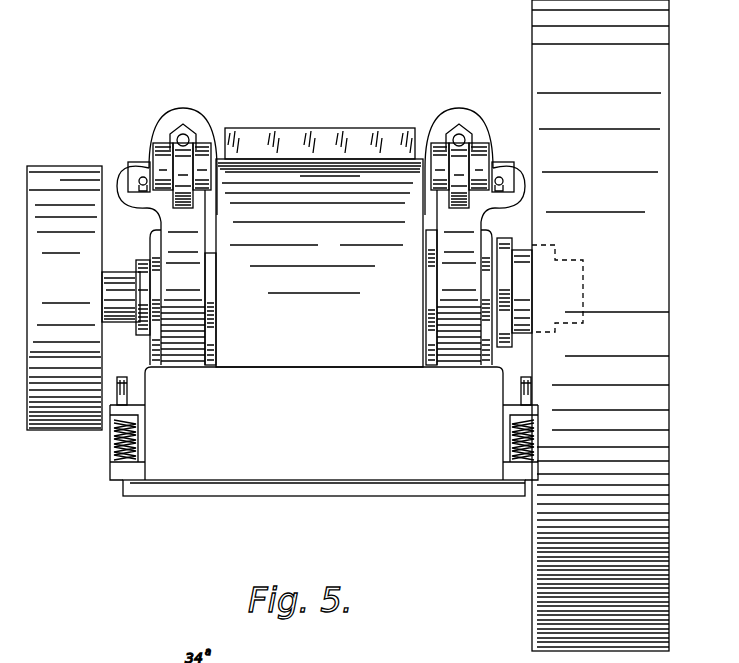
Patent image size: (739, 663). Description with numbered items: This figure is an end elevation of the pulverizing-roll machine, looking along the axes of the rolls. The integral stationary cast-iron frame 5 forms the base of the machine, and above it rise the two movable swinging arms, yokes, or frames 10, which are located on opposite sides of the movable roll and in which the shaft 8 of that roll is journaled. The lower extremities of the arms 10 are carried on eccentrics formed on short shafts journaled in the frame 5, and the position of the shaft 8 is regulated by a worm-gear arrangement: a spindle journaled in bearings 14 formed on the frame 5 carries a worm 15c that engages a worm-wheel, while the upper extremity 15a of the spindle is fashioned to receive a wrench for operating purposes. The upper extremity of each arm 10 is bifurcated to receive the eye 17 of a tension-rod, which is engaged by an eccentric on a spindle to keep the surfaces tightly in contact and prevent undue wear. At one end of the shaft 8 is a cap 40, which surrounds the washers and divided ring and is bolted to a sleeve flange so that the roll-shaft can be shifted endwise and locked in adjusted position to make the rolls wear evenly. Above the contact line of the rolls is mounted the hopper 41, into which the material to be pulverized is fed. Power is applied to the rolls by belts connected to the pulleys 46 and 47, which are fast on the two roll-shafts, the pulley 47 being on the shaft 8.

The stationary frame 5 is at (324, 431).
The roll-shaft 8 is at (120, 271).
The swinging arm 10 is at (188, 242).
The bearing 14 is at (116, 470).
The wrench-receiving extremity 15a is at (126, 372).
The worm 15c is at (507, 440).
The eye of tension-rod 17 is at (186, 152).
The cap 40 is at (520, 244).
The hopper 41 is at (310, 134).
The pulley 46 is at (64, 298).
The pulley 47 is at (600, 325).